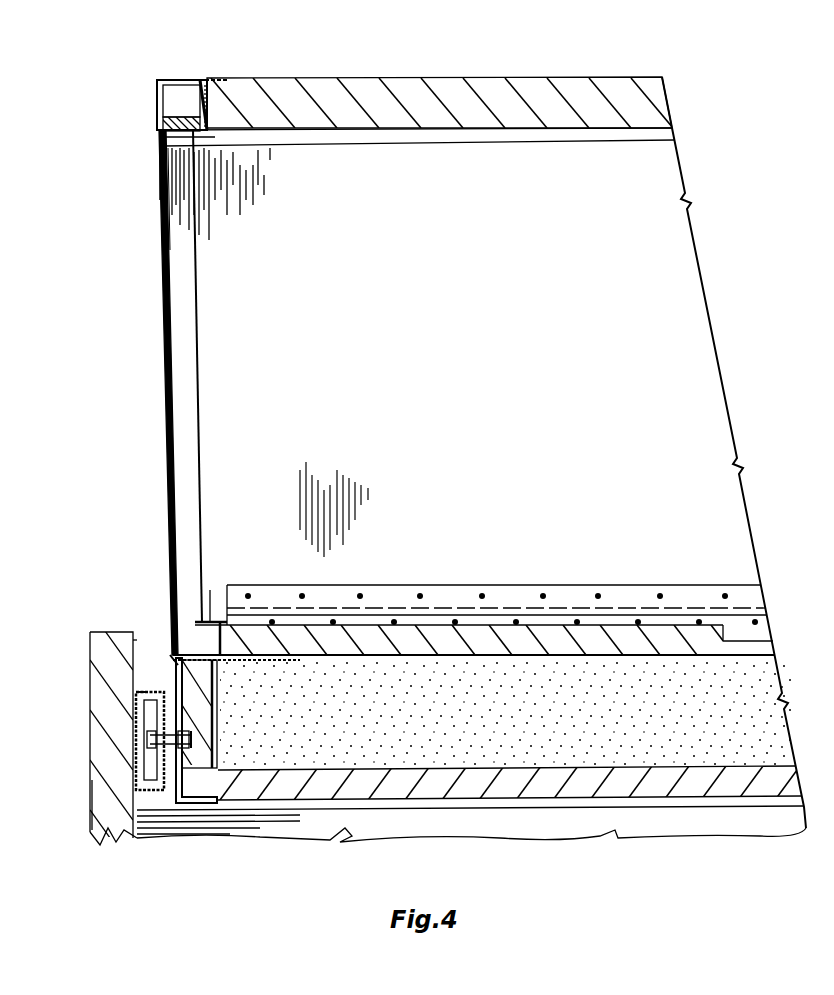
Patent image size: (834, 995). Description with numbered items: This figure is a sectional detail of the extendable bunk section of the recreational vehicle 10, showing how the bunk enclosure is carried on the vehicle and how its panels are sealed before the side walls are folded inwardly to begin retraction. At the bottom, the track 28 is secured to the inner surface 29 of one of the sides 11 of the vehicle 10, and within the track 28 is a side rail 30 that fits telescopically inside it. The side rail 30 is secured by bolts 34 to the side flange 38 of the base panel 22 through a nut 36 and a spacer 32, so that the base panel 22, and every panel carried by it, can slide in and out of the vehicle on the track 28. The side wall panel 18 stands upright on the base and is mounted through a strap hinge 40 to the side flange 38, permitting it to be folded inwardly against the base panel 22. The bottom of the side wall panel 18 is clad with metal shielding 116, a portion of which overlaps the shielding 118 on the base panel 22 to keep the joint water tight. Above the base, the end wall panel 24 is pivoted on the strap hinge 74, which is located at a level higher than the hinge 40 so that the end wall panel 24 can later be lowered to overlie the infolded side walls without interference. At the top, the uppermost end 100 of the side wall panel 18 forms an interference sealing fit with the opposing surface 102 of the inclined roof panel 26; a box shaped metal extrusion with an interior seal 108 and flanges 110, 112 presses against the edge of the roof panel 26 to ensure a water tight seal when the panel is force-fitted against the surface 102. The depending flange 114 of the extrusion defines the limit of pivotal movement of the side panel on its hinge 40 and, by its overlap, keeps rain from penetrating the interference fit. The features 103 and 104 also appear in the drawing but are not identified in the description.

The recreational vehicle 10 is at (92, 652).
The sides of the vehicle 11 is at (92, 795).
The side wall panel 18 is at (515, 630).
The base panel 22 is at (490, 774).
The end wall panel 24 is at (447, 377).
The inclined roof panel 26 is at (447, 78).
The track 28 is at (147, 695).
The inner surface 29 is at (132, 640).
The side rail 30 is at (140, 755).
The spacer 32 is at (180, 802).
The bolts 34 is at (150, 740).
The nut 36 is at (190, 745).
The side flange 38 is at (175, 662).
The strap hinges 40 is at (220, 660).
The strap hinge 74 is at (612, 606).
The uppermost end 100 is at (748, 640).
The opposing surface 102 is at (170, 185).
The insulation 103 is at (190, 142).
The cap member 104 is at (172, 80).
The interior seal 108 is at (182, 130).
The flange 110 is at (207, 80).
The flange 112 is at (208, 82).
The depending flange 114 is at (160, 163).
The metal shielding 116 is at (205, 622).
The shielding 118 is at (210, 590).